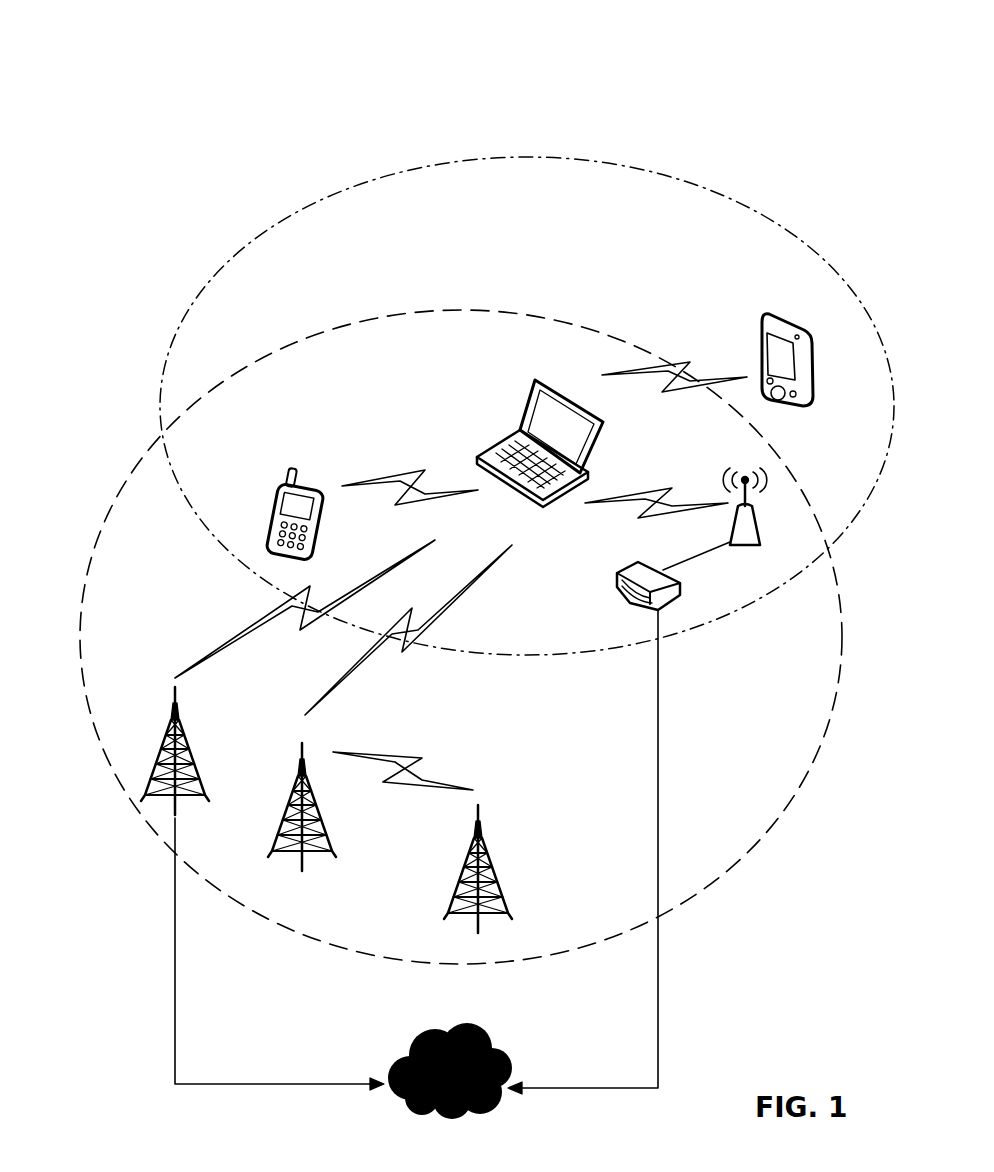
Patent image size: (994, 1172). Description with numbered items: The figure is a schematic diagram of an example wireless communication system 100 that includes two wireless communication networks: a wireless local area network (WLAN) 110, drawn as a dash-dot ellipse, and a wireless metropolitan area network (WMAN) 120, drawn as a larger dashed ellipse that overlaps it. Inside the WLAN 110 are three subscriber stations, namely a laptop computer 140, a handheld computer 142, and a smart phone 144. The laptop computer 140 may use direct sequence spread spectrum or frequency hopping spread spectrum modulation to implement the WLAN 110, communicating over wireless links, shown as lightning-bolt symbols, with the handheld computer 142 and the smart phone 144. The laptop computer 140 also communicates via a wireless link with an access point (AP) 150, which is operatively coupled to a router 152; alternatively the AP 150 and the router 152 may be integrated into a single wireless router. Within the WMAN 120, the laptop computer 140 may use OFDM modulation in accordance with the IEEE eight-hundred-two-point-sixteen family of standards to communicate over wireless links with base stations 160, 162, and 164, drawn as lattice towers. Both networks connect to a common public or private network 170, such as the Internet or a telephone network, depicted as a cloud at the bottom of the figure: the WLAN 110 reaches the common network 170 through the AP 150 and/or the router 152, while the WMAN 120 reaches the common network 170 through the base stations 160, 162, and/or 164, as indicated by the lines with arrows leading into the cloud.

The wireless communication system 100 is at (136, 104).
The wireless local area network 110 is at (405, 175).
The wireless metropolitan area network 120 is at (770, 825).
The laptop computer 140 is at (536, 378).
The handheld computer 142 is at (762, 316).
The smart phone 144 is at (297, 476).
The access point 150 is at (757, 516).
The router 152 is at (617, 594).
The base station 160 is at (186, 747).
The base station 162 is at (327, 830).
The base station 164 is at (494, 870).
The common public or private network 170 is at (393, 1053).